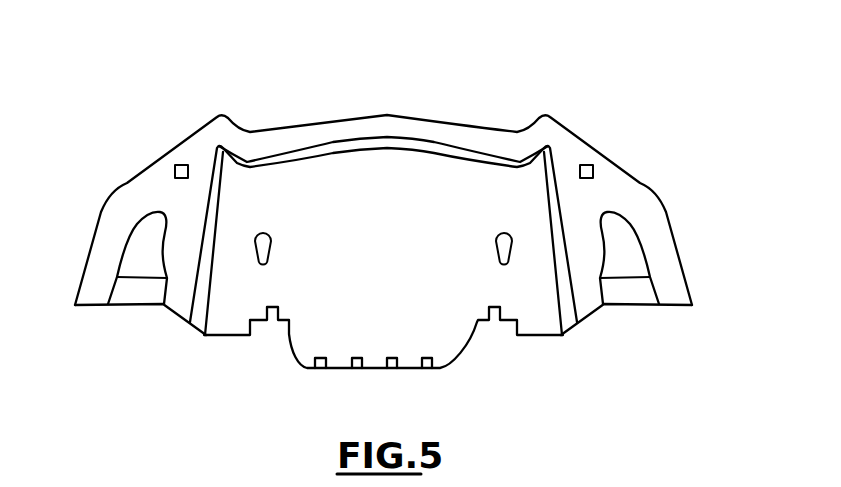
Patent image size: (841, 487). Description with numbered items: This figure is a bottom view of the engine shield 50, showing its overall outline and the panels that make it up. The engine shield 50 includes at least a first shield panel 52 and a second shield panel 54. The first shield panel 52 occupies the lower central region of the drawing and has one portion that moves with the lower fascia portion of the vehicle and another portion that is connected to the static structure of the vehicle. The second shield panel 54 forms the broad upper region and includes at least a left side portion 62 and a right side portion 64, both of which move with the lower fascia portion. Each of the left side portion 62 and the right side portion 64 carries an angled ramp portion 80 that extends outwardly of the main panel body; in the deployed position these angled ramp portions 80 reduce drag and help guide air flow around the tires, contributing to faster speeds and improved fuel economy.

The engine shield 50 is at (404, 154).
The first shield panel 52 is at (458, 318).
The second shield panel 54 is at (573, 157).
The left side portion 62 is at (108, 277).
The right side portion 64 is at (673, 288).
The angled ramp portion 80 is at (136, 272).